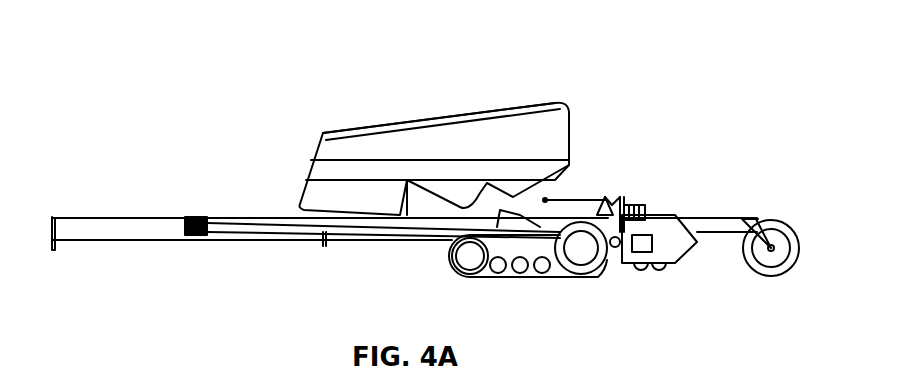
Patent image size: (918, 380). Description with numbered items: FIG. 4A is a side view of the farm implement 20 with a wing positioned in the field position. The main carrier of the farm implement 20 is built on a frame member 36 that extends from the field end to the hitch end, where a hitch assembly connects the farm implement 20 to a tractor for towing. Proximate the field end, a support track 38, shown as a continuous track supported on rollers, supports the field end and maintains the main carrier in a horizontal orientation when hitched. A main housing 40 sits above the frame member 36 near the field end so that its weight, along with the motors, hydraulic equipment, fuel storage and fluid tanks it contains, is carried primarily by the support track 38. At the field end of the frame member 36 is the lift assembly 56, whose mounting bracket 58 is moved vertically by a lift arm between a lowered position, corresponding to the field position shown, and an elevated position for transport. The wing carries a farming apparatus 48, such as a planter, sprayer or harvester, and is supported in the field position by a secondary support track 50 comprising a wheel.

The farm implement 20 is at (592, 83).
The frame member 36 is at (127, 218).
The support track 38 is at (548, 275).
The main housing 40 is at (402, 115).
The farming apparatus 48 is at (663, 260).
The secondary support track 50 is at (788, 212).
The lift assembly 56 is at (623, 183).
The mounting bracket 58 is at (628, 202).